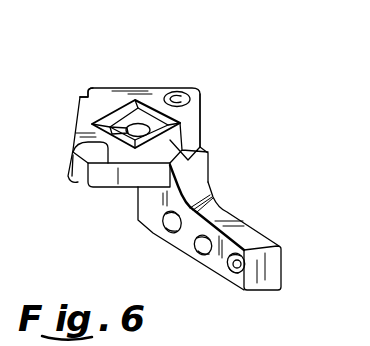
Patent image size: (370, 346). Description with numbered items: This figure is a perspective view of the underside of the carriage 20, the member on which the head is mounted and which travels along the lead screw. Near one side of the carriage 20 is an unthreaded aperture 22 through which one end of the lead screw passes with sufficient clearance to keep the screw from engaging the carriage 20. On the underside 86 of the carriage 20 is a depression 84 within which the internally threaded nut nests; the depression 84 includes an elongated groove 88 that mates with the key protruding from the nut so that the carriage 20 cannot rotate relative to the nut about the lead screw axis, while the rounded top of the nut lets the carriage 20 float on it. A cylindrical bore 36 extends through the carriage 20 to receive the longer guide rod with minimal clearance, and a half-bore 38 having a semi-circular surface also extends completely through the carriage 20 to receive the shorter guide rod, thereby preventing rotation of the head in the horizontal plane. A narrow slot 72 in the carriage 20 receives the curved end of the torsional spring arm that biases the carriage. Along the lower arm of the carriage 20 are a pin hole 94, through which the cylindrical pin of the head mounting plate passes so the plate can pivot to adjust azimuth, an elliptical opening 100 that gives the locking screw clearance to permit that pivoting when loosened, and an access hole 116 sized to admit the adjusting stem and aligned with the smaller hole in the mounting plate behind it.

The carriage 20 is at (228, 212).
The unthreaded aperture 22 is at (90, 124).
The cylindrical bore 36 is at (197, 88).
The half-bore 38 is at (72, 176).
The narrow slot 72 is at (93, 93).
The depression 84 is at (150, 108).
The underside 86 is at (125, 89).
The elongated groove 88 is at (200, 141).
The pin hole 94 is at (235, 275).
The elliptical opening 100 is at (200, 252).
The access hole 116 is at (164, 229).